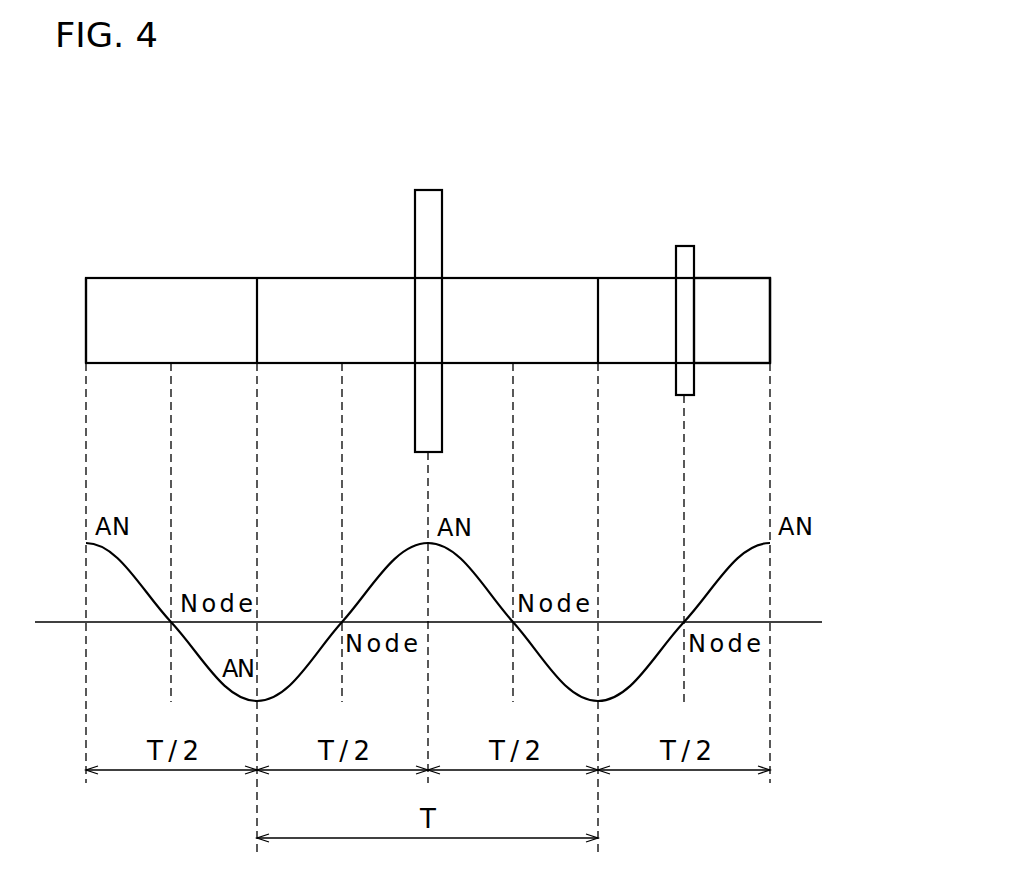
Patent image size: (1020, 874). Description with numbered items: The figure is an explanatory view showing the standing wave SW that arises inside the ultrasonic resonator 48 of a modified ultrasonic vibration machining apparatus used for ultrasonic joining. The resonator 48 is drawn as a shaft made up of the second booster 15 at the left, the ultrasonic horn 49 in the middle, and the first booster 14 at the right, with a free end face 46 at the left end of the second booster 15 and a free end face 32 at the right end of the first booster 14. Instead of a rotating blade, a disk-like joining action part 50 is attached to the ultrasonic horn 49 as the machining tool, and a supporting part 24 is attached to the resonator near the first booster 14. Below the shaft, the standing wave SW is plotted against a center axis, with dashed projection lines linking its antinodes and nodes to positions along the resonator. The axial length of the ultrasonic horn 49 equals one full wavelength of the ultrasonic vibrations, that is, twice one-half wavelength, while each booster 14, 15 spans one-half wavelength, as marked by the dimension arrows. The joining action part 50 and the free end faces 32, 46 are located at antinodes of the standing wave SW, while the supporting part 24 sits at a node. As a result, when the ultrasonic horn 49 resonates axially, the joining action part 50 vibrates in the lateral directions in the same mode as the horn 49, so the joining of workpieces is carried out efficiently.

The first booster 14 is at (743, 285).
The second booster 15 is at (115, 285).
The supporting part 24 is at (687, 252).
The free end face 32 is at (770, 305).
The free end face 46 is at (86, 307).
The ultrasonic resonator 48 is at (798, 342).
The ultrasonic horn 49 is at (462, 200).
The joining action part 50 is at (427, 197).
The standing wave SW is at (725, 570).